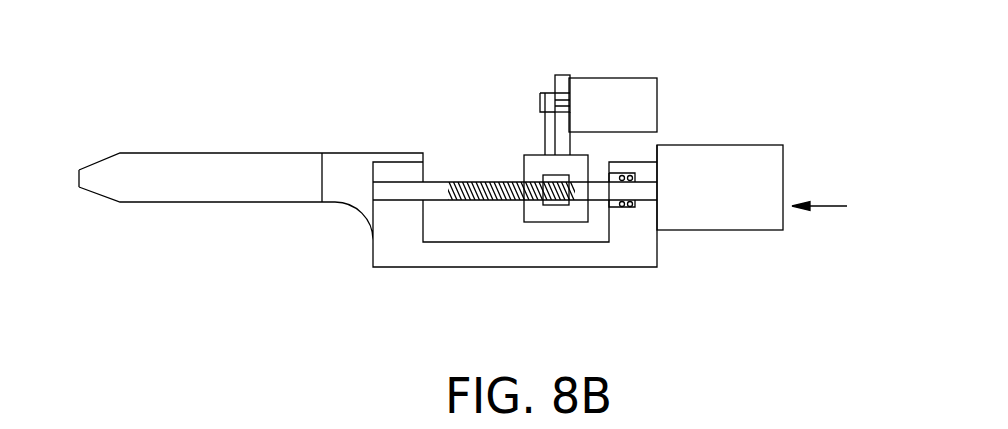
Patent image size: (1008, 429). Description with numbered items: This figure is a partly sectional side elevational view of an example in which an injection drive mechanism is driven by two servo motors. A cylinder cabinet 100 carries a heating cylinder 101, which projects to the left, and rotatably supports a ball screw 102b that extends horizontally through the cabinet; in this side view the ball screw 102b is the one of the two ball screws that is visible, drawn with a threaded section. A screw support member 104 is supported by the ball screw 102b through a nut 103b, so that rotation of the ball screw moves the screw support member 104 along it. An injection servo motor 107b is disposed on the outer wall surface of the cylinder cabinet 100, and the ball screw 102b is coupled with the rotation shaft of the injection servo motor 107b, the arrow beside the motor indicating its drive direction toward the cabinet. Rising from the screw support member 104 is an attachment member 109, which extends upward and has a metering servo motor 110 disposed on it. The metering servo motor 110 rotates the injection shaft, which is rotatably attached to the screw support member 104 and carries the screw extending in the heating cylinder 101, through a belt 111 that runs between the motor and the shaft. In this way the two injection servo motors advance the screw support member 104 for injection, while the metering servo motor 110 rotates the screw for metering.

The cylinder cabinet 100 is at (383, 243).
The heating cylinder 101 is at (252, 153).
The ball screw 102b is at (440, 182).
The nut 103b is at (553, 205).
The screw support member 104 is at (535, 167).
The injection servo motor 107b is at (783, 173).
The attachment member 109 is at (563, 75).
The metering servo motor 110 is at (657, 95).
The belt 111 is at (545, 125).